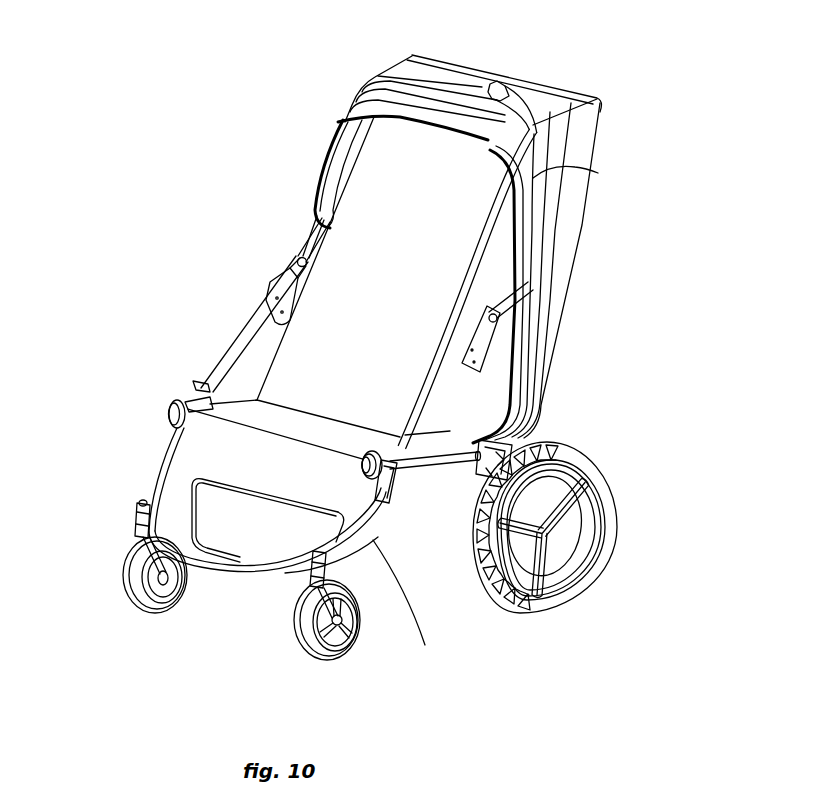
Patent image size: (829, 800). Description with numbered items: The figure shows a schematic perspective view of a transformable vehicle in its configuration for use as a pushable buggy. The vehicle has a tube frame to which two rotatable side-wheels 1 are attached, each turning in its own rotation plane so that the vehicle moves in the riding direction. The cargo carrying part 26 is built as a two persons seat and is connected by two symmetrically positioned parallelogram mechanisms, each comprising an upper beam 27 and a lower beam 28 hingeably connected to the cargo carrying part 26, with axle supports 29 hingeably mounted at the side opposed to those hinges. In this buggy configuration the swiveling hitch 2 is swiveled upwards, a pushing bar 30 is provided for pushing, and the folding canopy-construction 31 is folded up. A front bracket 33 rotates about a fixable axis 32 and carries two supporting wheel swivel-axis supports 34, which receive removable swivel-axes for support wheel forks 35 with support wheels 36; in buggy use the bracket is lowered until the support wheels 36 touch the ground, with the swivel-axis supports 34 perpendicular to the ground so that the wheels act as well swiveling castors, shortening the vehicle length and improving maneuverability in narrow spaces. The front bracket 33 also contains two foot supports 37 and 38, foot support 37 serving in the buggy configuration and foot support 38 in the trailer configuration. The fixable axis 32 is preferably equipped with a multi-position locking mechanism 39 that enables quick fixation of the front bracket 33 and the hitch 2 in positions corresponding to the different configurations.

The side-wheel 1 is at (398, 490).
The swiveling hitch 2 is at (520, 188).
The cargo carrying part 26 is at (290, 378).
The upper beam 27 is at (513, 442).
The lower beam 28 is at (483, 565).
The axle support 29 is at (540, 493).
The pushing bar 30 is at (513, 78).
The folding canopy-construction 31 is at (535, 291).
The fixable axis 32 is at (175, 400).
The front bracket 33 is at (232, 567).
The supporting wheel swivel-axis support 34 is at (137, 513).
The support wheel fork 35 is at (187, 587).
The support wheel 36 is at (137, 603).
The foot support 37 is at (197, 518).
The foot support 38 is at (217, 523).
The multi-position locking mechanism 39 is at (480, 482).